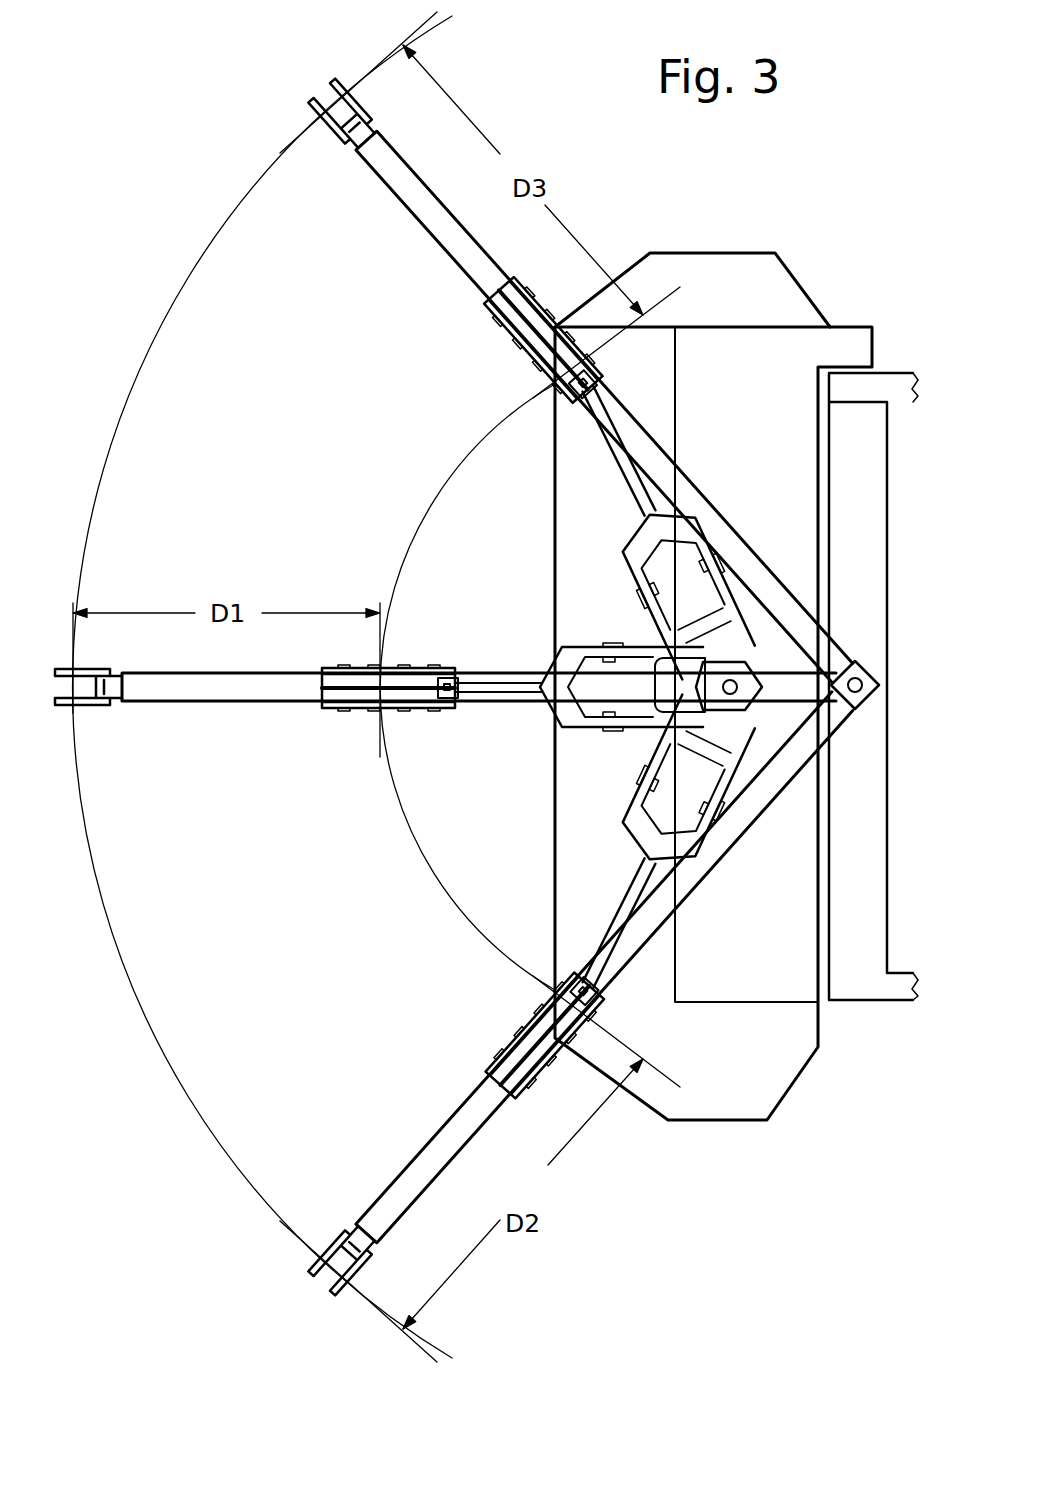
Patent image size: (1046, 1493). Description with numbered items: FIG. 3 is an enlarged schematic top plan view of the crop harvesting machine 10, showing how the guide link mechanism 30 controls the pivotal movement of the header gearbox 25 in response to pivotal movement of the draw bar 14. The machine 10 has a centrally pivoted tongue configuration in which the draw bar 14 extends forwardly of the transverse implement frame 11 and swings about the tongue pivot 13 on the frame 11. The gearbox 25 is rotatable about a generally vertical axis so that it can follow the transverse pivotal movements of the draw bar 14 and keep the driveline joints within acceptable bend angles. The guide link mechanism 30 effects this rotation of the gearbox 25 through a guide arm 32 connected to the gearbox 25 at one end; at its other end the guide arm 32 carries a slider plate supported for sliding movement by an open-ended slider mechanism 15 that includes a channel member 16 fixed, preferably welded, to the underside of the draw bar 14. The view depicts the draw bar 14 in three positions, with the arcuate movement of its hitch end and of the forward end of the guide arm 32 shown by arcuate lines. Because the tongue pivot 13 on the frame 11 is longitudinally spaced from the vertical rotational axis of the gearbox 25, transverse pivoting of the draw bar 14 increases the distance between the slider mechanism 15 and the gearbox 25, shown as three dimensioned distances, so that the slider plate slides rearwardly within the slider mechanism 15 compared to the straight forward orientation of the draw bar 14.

The crop harvesting machine 10 is at (760, 222).
The transverse implement frame 11 is at (888, 544).
The tongue pivot 13 is at (862, 675).
The draw bar 14 is at (425, 216).
The slider mechanism 15 is at (468, 322).
The channel member 16 is at (533, 348).
The gearbox 25 is at (752, 700).
The guide link mechanism 30 is at (610, 765).
The guide arm 32 is at (628, 488).